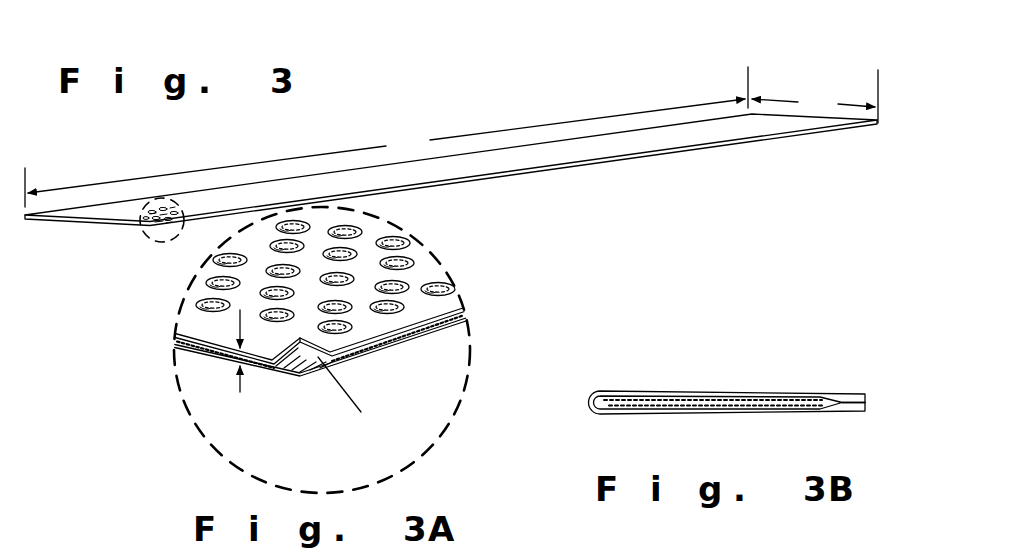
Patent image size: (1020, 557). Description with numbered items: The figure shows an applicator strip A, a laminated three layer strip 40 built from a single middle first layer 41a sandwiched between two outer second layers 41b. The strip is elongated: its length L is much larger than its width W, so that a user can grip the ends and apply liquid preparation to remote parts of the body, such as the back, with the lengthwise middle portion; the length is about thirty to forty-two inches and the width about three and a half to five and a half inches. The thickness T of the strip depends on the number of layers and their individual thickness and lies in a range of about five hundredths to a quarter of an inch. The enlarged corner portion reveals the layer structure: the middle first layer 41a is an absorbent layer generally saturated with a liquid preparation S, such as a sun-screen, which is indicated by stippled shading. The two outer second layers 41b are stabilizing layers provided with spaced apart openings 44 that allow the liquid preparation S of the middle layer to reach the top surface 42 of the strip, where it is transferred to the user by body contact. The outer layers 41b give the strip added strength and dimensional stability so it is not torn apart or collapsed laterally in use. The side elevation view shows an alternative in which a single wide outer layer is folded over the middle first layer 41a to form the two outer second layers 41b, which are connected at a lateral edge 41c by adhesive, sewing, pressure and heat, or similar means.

In FIG. 3, the applicator strip A is at (596, 106).
In FIG. 3, the laminated three layer strip 40 is at (635, 160).
In FIG. 3, the top surface 42 is at (526, 156).
In FIG. 3A, the spaced apart openings 44 is at (358, 254).
In FIG. 3A, the middle first layer 41a is at (387, 347).
In FIG. 3B, the middle first layer 41a is at (752, 400).
In FIG. 3A, the outer second layers 41b is at (417, 343).
In FIG. 3B, the outer second layers 41b is at (630, 407).
In FIG. 3B, the lateral edge 41c is at (856, 394).
In FIG. 3, the length L is at (386, 137).
In FIG. 3, the width W is at (815, 96).
In FIG. 3A, the thickness T is at (250, 366).
In FIG. 3A, the liquid preparation S is at (346, 398).